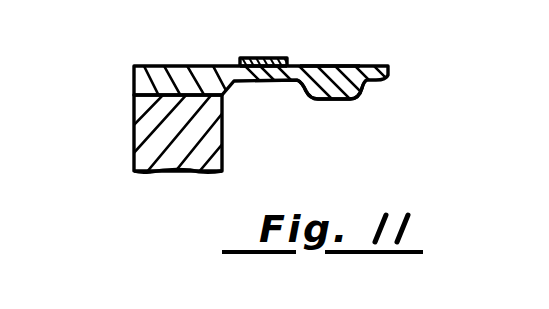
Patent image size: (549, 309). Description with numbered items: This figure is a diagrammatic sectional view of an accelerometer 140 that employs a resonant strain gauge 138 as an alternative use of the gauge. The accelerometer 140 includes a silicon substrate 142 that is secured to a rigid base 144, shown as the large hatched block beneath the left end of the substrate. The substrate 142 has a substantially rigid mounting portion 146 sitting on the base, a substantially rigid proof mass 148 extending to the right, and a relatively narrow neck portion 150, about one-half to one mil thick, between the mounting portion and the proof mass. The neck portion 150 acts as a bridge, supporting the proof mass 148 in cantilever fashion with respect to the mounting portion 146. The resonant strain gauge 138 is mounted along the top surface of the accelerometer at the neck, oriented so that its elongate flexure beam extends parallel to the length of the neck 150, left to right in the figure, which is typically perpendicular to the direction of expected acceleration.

The resonant strain gauge 138 is at (266, 57).
The accelerometer 140 is at (154, 192).
The silicon substrate 142 is at (321, 65).
The rigid base 144 is at (148, 132).
The mounting portion 146 is at (145, 82).
The proof mass 148 is at (357, 99).
The neck portion 150 is at (256, 70).